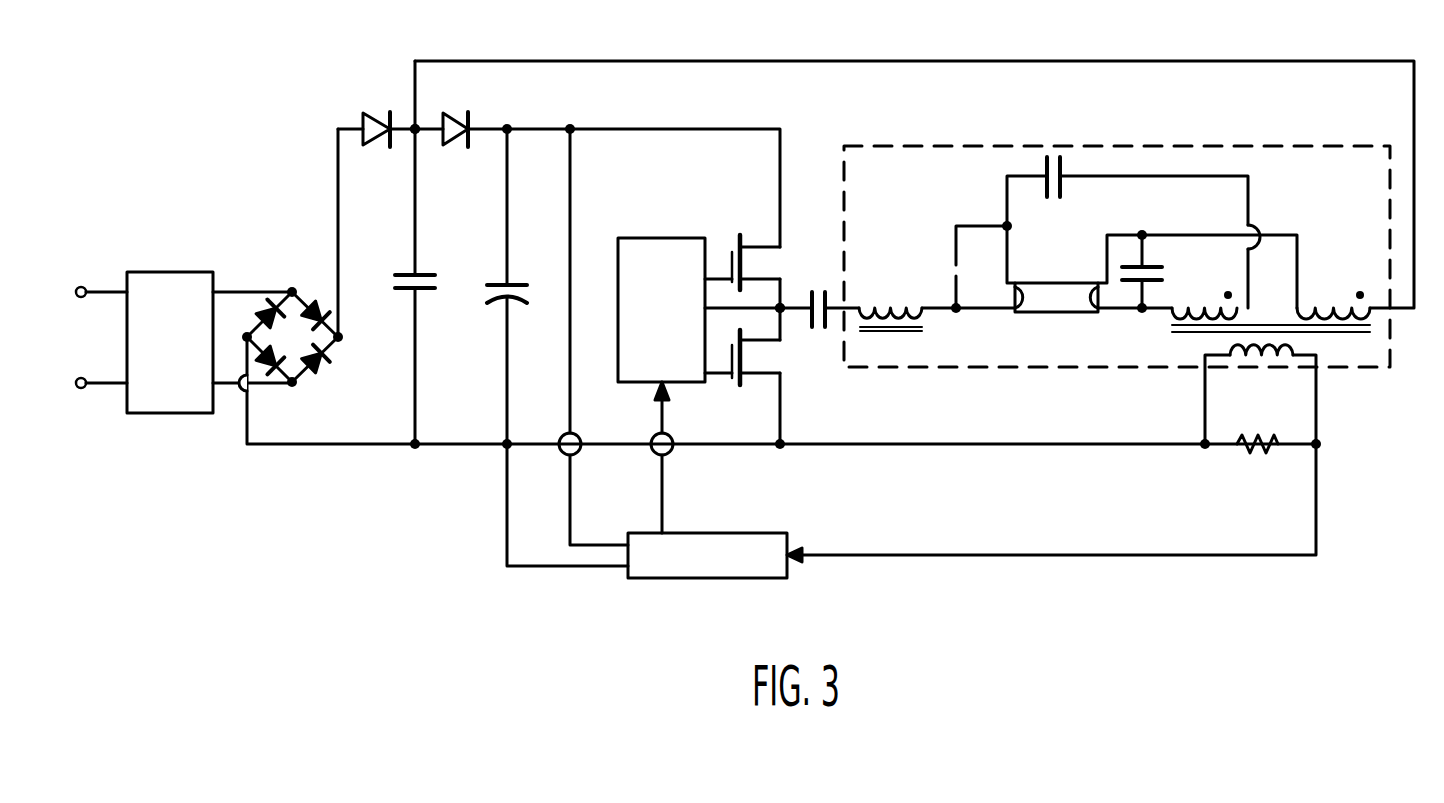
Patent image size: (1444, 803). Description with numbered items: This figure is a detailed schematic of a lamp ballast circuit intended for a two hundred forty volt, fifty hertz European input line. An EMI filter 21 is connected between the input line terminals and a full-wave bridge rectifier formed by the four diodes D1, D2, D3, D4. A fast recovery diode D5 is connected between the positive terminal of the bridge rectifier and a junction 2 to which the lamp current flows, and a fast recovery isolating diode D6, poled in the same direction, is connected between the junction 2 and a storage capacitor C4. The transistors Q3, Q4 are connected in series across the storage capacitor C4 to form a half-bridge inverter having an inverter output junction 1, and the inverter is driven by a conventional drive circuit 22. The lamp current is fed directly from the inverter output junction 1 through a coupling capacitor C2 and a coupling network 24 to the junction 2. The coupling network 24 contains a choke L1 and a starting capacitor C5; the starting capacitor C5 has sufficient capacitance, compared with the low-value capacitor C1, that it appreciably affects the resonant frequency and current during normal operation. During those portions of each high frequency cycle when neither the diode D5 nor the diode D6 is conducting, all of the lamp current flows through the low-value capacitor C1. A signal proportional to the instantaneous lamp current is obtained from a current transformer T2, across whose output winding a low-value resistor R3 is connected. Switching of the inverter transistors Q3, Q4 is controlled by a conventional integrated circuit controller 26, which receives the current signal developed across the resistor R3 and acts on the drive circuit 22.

The EMI filter 21 is at (137, 270).
The diode D1 is at (309, 300).
The diode D2 is at (323, 362).
The diode D3 is at (272, 380).
The diode D4 is at (273, 295).
The fast recovery diode D5 is at (377, 113).
The fast recovery isolating diode D6 is at (455, 113).
The junction 2 is at (418, 133).
The low-value capacitor C1 is at (430, 281).
The storage capacitor C4 is at (521, 291).
The drive circuit 22 is at (630, 238).
The transistor Q3 is at (753, 249).
The transistor Q4 is at (753, 372).
The inverter output junction 1 is at (783, 303).
The coupling capacitor C2 is at (816, 328).
The coupling network 24 is at (888, 146).
The choke L1 is at (886, 306).
The starting capacitor C5 is at (1053, 194).
The current transformer T2 is at (1342, 343).
The low-value resistor R3 is at (1257, 462).
The integrated circuit controller 26 is at (760, 533).